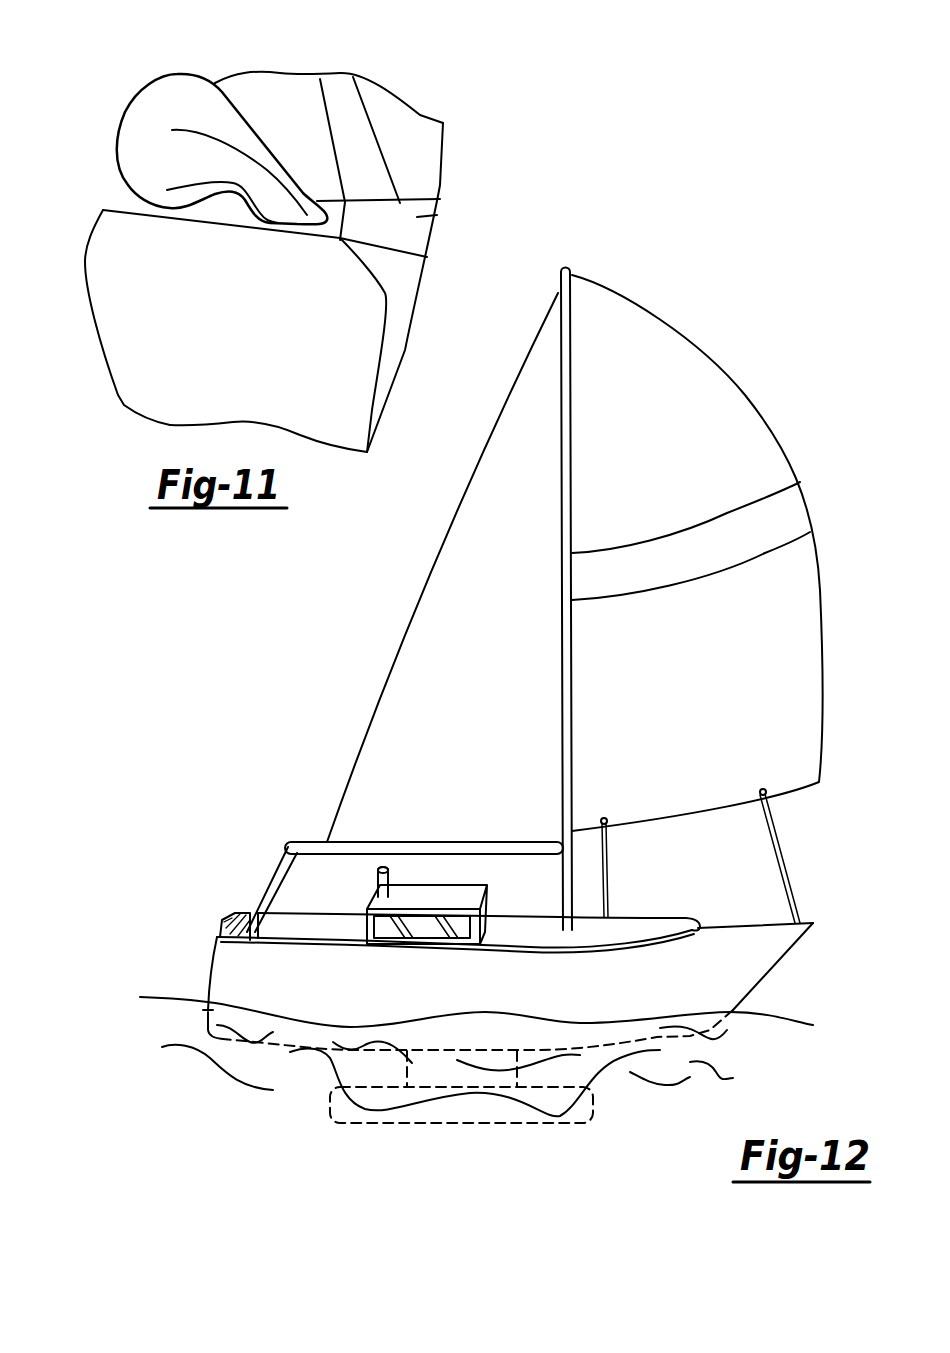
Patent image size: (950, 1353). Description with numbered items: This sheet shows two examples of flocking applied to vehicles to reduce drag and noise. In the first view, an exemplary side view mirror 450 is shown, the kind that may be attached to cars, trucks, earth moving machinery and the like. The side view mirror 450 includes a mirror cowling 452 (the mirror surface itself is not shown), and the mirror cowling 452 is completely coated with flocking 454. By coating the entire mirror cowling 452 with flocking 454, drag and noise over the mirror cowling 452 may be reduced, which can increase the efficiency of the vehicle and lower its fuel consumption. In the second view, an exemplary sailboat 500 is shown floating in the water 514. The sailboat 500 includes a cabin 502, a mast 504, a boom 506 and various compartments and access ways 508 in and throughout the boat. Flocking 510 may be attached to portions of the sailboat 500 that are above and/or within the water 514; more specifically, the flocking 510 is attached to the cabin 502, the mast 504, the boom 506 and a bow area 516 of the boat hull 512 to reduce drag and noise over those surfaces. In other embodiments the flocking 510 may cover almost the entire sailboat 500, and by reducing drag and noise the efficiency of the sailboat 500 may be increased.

In FIG. 11, the side view mirror 450 is at (111, 49).
In FIG. 11, the mirror cowling 452 is at (188, 88).
In FIG. 11, the flocking 454 is at (184, 171).
In FIG. 12, the sailboat 500 is at (411, 526).
In FIG. 12, the cabin 502 is at (505, 903).
In FIG. 12, the mast 504 is at (569, 887).
In FIG. 12, the boom 506 is at (417, 847).
In FIG. 12, the compartments and access ways 508 is at (353, 915).
In FIG. 12, the flocking 510 is at (700, 987).
In FIG. 12, the boat hull 512 is at (763, 972).
In FIG. 12, the water 514 is at (476, 1056).
In FIG. 12, the bow area 516 is at (738, 943).